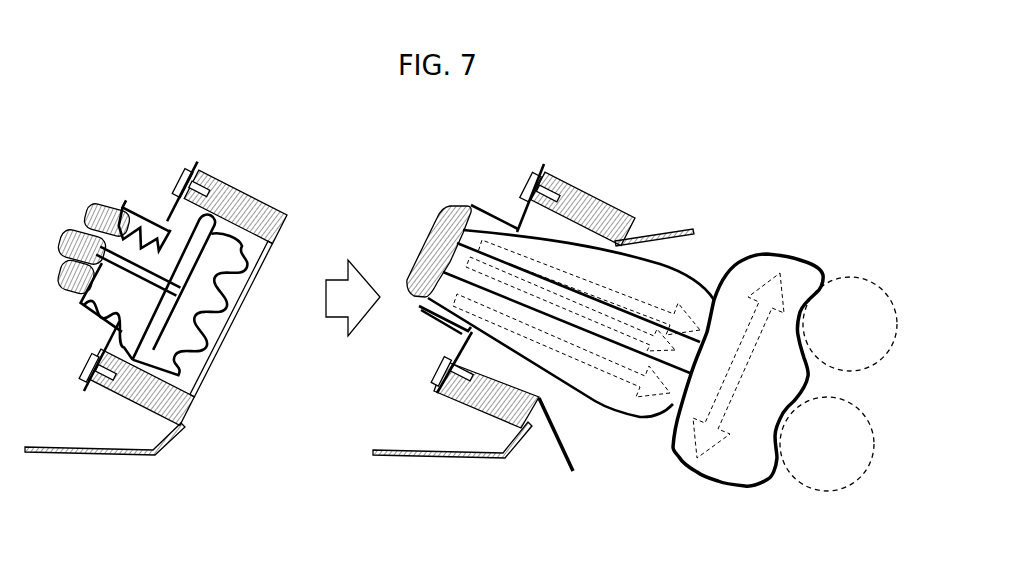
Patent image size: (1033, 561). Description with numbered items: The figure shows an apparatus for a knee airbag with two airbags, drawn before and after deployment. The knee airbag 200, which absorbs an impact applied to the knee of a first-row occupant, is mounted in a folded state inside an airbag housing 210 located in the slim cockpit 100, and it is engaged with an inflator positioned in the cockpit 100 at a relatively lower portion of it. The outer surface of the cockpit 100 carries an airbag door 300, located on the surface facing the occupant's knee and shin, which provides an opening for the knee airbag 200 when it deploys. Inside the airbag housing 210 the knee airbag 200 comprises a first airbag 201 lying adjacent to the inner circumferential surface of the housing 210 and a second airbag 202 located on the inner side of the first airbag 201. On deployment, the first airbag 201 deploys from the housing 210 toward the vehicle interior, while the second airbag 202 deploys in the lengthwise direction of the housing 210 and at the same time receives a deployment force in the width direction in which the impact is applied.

The slim cockpit 100 is at (673, 230).
The knee airbag (KAB) 200 is at (128, 340).
The first airbag 201 is at (670, 268).
The second airbag 202 is at (193, 377).
The airbag housing 210 is at (233, 190).
The airbag door 300 is at (247, 297).